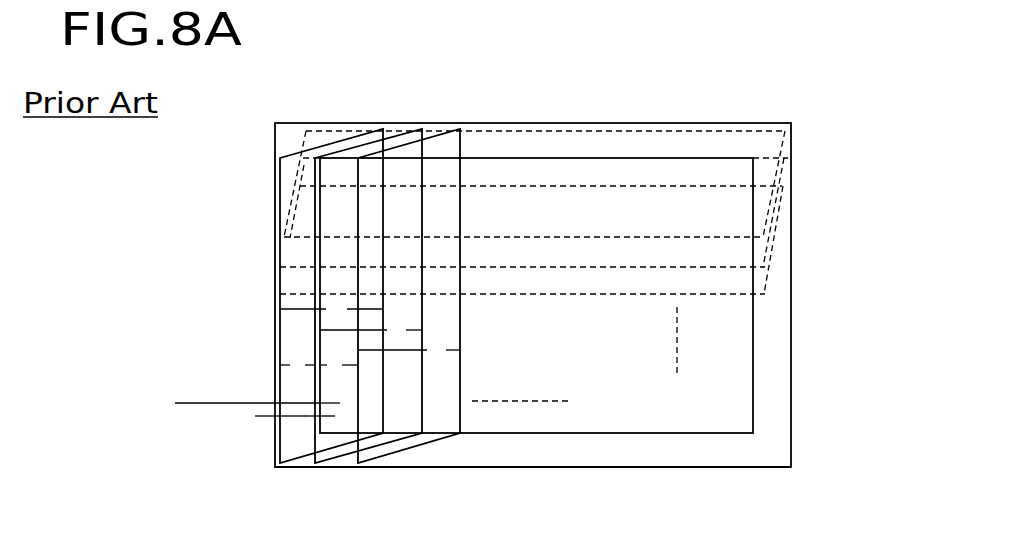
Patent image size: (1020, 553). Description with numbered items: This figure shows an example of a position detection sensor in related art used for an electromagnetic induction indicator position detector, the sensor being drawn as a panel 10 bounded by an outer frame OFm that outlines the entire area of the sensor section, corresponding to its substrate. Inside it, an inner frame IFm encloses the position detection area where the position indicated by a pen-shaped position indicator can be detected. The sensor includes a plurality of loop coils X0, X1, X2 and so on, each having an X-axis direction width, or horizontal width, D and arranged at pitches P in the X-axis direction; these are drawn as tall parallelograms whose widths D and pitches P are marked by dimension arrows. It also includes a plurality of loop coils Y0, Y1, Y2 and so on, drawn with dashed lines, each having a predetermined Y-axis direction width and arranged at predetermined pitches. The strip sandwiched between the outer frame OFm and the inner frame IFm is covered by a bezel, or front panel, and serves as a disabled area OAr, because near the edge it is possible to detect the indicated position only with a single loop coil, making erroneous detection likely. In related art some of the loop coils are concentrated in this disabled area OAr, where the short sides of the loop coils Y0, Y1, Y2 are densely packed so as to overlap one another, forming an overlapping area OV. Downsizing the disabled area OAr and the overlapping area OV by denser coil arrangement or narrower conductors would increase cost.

The display device / panel 10 is at (782, 332).
The outer frame OFm is at (632, 467).
The inner frame IFm is at (632, 432).
The loop coil X0 is at (334, 142).
The loop coil X1 is at (403, 133).
The loop coil X2 is at (441, 134).
The loop coil Y0 is at (785, 143).
The loop coil Y1 is at (783, 179).
The loop coil Y2 is at (782, 216).
The X-axis direction width D is at (370, 331).
The pitch P is at (319, 366).
The disabled area OAr is at (257, 388).
The overlapping area OV is at (295, 417).